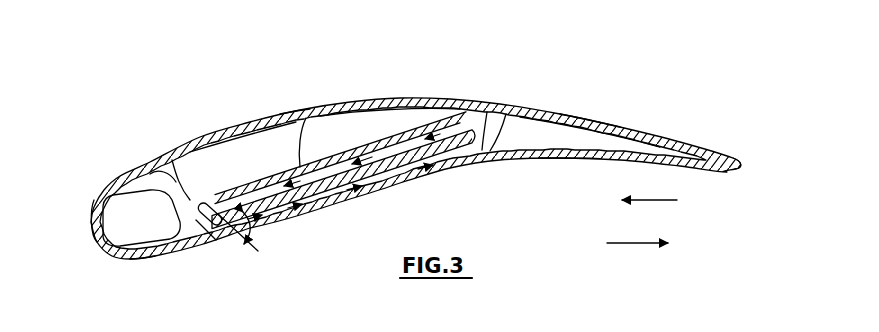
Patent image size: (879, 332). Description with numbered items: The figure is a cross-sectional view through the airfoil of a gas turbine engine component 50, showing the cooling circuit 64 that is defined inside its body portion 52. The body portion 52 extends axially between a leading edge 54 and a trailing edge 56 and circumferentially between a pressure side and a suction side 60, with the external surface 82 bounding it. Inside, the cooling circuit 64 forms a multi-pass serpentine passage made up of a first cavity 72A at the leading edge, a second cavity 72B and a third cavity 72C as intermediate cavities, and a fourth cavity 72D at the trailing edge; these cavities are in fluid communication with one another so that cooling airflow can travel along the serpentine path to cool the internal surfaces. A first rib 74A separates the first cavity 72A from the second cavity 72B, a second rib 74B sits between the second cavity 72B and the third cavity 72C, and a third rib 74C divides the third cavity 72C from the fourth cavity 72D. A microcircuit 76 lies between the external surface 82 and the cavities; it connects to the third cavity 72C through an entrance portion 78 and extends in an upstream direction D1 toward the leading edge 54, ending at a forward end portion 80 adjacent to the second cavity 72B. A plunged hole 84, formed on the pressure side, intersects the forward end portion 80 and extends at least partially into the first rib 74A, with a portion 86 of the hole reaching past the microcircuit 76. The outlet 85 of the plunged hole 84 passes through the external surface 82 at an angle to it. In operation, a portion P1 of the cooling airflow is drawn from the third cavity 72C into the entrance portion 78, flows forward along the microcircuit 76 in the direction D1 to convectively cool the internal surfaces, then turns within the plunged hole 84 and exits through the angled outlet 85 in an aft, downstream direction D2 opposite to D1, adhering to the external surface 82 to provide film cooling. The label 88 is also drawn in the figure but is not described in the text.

The component 50 is at (440, 46).
The body portion 52 is at (488, 125).
The leading edge 54 is at (97, 230).
The trailing edge 56 is at (742, 165).
The suction side 60 is at (607, 120).
The cooling circuit 64 is at (296, 98).
The first cavity 72A is at (161, 234).
The second cavity 72B is at (251, 177).
The third cavity 72C is at (386, 137).
The fourth cavity 72D is at (560, 116).
The first rib 74A is at (175, 193).
The second rib 74B is at (313, 133).
The third rib 74C is at (507, 113).
The microcircuit 76 is at (381, 165).
The entrance portion 78 is at (486, 134).
The forward end portion 80 is at (212, 198).
The external surface 82 is at (140, 263).
The plunged hole 84 is at (201, 230).
The outlet 85 is at (230, 236).
The portion of the plunged hole 86 is at (170, 232).
The pressure side wall 88 is at (578, 160).
The portion of the cooling airflow P1 is at (448, 141).
The upstream direction D1 is at (643, 200).
The downstream direction D2 is at (645, 243).